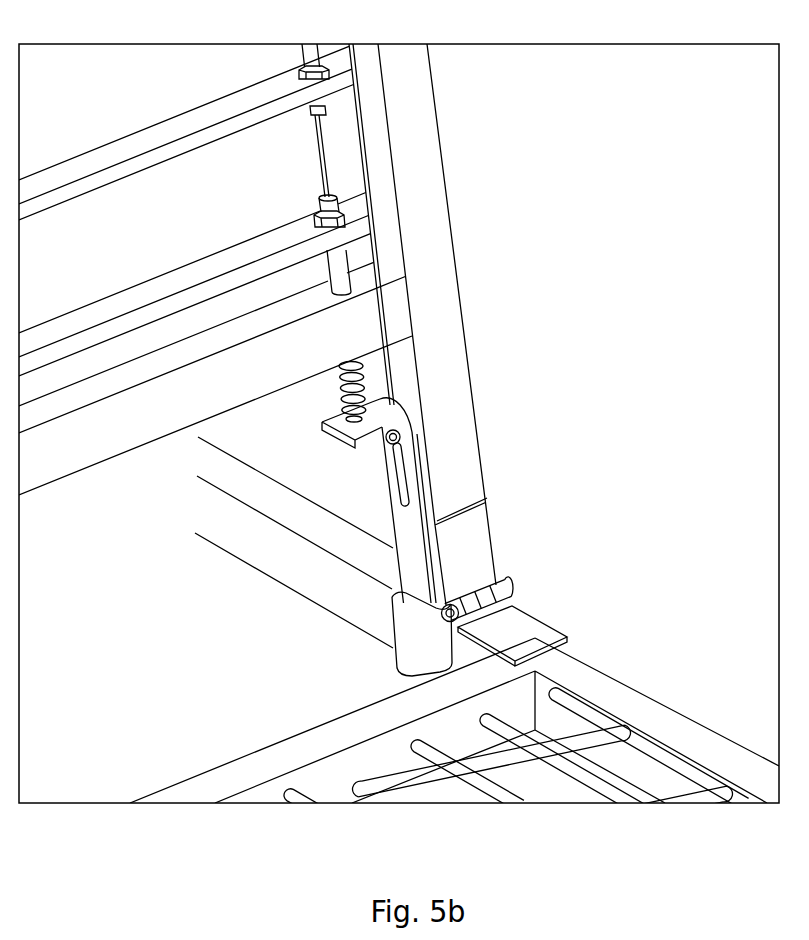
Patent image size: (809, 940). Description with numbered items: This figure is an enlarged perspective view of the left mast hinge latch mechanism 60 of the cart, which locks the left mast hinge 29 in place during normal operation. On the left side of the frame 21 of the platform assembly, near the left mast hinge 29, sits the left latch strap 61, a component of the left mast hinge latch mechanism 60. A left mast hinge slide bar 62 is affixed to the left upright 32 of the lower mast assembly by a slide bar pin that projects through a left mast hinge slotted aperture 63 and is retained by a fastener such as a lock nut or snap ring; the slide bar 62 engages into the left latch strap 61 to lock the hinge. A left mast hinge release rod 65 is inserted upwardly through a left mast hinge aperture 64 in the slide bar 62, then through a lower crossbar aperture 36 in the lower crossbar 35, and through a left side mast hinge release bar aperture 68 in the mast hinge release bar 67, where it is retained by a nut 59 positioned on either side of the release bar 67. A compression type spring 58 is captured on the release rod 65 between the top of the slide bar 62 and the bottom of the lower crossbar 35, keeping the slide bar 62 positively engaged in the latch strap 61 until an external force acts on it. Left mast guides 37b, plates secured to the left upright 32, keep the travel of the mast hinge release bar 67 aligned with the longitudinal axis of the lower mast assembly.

The frame 21 is at (313, 585).
The left mast hinge 29 is at (515, 630).
The left upright 32 is at (440, 118).
The lower crossbar 35 is at (370, 335).
The lower crossbar aperture 36 is at (350, 293).
The left mast guides 37b is at (373, 162).
The compression type spring 58 is at (342, 387).
The nut 59 is at (314, 217).
The left mast hinge latch mechanism 60 is at (400, 413).
The left latch strap 61 is at (397, 660).
The left mast hinge slide bar 62 is at (422, 431).
The left mast hinge slotted aperture 63 is at (393, 485).
The left mast hinge aperture 64 is at (330, 432).
The left mast hinge release rod 65 is at (347, 263).
The mast hinge release bar 67 is at (113, 293).
The left side mast hinge release bar aperture 68 is at (342, 221).